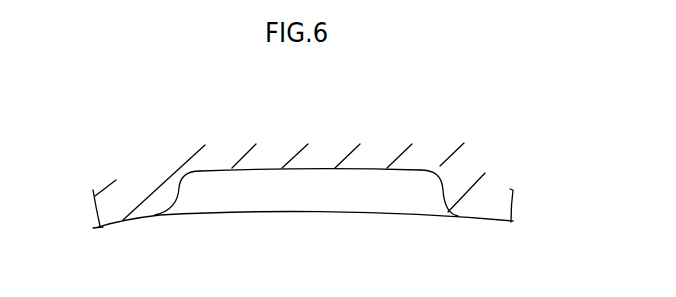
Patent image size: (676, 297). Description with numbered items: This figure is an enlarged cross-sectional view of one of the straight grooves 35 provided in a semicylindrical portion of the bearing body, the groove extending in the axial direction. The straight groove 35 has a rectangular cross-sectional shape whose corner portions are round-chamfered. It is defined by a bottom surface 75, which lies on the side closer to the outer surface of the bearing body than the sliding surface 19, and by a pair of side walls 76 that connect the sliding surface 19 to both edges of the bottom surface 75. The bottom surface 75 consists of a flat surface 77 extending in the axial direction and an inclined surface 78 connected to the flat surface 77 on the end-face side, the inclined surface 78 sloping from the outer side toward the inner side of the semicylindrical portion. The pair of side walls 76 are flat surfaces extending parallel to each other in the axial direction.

The sliding surface 19 is at (307, 213).
The straight groove 35 is at (263, 172).
The bottom surface 75 is at (347, 170).
The side walls 76 is at (170, 190).
The flat surface 77 is at (395, 170).
The inclined surface 78 is at (225, 202).